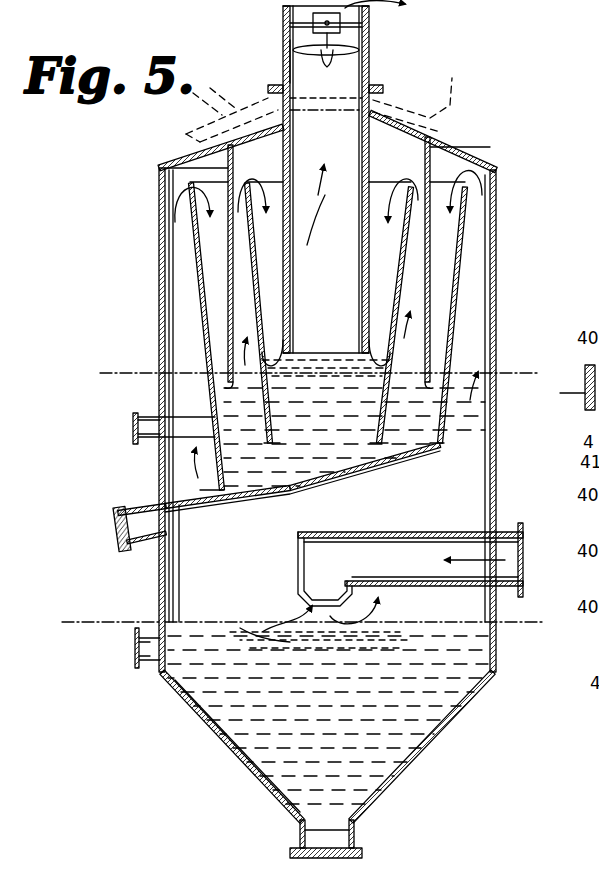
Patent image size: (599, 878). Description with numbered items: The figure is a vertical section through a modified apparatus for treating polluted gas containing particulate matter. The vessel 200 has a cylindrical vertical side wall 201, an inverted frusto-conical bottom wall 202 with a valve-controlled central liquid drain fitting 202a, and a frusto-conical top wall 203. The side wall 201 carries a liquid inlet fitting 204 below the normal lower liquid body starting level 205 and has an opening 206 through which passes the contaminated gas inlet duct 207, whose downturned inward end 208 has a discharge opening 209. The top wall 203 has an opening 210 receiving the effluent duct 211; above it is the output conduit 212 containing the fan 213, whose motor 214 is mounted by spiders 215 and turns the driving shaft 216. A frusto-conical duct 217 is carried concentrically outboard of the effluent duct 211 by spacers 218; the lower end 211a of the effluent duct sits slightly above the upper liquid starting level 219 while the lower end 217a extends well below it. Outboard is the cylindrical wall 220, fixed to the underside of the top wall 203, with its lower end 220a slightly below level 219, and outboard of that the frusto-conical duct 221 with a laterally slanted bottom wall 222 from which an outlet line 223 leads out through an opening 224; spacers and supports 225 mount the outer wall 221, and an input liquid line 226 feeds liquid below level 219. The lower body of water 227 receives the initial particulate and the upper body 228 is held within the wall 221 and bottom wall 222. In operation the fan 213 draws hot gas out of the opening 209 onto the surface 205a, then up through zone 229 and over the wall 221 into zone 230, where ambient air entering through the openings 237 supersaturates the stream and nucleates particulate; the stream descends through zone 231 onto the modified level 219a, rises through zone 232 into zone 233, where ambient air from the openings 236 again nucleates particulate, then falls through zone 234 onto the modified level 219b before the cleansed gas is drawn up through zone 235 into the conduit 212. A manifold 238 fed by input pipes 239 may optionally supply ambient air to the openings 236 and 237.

The vessel 200 is at (335, 484).
The cylindrical vertical side wall 201 is at (497, 472).
The inverted frusto-conical bottom wall 202 is at (418, 768).
The central liquid drain fitting 202a is at (360, 850).
The frusto-conical top wall 203 is at (497, 168).
The liquid inlet fitting 204 is at (142, 672).
The normal lower liquid body starting level 205 is at (118, 612).
The surface of the water body 205a is at (268, 624).
The opening 206 is at (510, 530).
The contaminated gas inlet duct 207 is at (395, 560).
The downturned inward end 208 is at (297, 566).
The discharge opening 209 is at (360, 592).
The opening 210 is at (282, 112).
The effluent duct or tube 211 is at (291, 142).
The lower end of effluent duct 211a is at (312, 345).
The output conduit 212 is at (283, 64).
The fan or blower 213 is at (316, 56).
The motor or power source 214 is at (348, 24).
The spiders 215 is at (290, 26).
The driving shaft 216 is at (343, 36).
The frusto-conical duct 217 is at (392, 298).
The lower end of duct 217 217a is at (380, 462).
The spacers 218 is at (270, 300).
The liquid starting level 219 is at (512, 375).
The modified water surface level 219a is at (430, 385).
The modified water surface level 219b is at (360, 372).
The cylindrical tube sheet, tube or duct 220 is at (440, 140).
The lower end of wall 220 220a is at (228, 380).
The frusto-conical duct 221 is at (470, 212).
The laterally slanted bottom wall 222 is at (340, 482).
The outlet line 223 is at (178, 532).
The opening 224 is at (160, 506).
The spacers and supports 225 is at (218, 300).
The input liquid line 226 is at (134, 444).
The body of water 227 is at (243, 742).
The body of water or other cleansing liquid 228 is at (434, 447).
The zone 229 is at (500, 602).
The zone 230 is at (450, 167).
The zone 231 is at (446, 300).
The zone 232 is at (416, 270).
The zone 233 is at (332, 220).
The zone 234 is at (358, 268).
The zone 235 is at (330, 174).
The ambient air openings 236 is at (192, 135).
The ambient air input openings 237 is at (185, 149).
The manifold 238 is at (212, 98).
The input pipes or tubes 239 is at (412, 98).